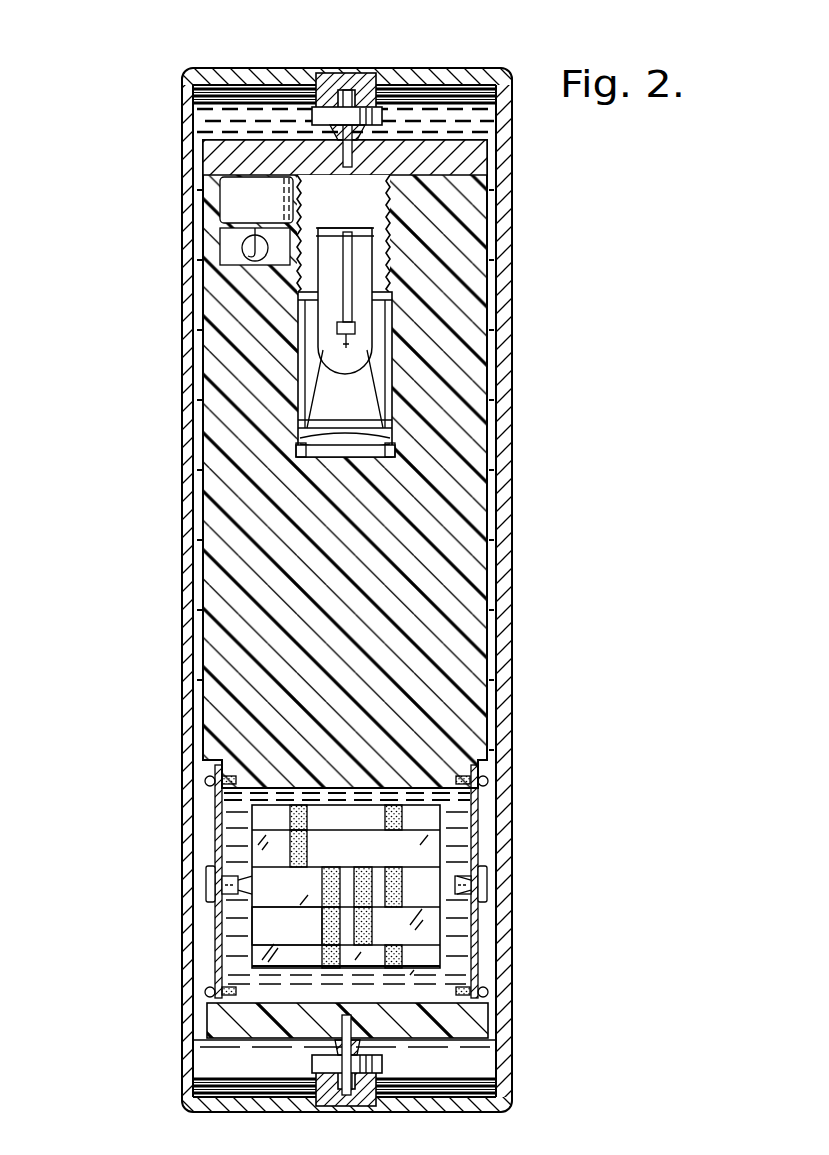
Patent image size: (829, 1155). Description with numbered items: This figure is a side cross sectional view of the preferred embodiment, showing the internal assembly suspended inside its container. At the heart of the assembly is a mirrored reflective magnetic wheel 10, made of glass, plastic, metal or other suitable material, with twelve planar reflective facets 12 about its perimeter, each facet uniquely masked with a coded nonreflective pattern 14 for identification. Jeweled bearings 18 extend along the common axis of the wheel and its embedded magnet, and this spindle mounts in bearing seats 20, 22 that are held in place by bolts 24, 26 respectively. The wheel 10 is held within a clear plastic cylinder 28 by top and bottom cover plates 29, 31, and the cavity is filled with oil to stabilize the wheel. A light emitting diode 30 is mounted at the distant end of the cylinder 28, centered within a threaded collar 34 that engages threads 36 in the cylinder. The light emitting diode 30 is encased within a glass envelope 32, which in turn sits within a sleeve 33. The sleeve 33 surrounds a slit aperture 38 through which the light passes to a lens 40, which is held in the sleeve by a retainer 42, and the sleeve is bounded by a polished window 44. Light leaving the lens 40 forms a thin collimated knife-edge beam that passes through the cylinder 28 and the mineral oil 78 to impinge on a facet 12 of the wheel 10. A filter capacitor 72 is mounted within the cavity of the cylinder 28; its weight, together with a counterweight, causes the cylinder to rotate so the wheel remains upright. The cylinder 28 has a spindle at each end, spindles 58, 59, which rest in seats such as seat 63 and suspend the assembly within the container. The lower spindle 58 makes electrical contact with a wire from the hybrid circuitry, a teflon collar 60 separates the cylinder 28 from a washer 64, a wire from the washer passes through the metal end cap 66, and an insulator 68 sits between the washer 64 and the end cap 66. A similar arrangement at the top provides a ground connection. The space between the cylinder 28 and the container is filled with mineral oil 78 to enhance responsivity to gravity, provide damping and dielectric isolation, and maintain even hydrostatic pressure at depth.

The mirrored reflective magnetic wheel 10 is at (446, 928).
The planar reflective facet 12 is at (255, 935).
The coded nonreflective pattern 14 is at (432, 966).
The jeweled bearings 18 is at (470, 873).
The bearing seat 20 is at (245, 890).
The bearing seat 22 is at (466, 895).
The bolt 24 is at (209, 867).
The bolt 26 is at (487, 886).
The clear plastic cylinder 28 is at (482, 664).
The top cover plate 29 is at (218, 798).
The light emitting diode 30 is at (338, 326).
The bottom cover plate 31 is at (477, 800).
The glass envelope 32 is at (343, 346).
The sleeve 33 is at (372, 332).
The threaded collar 34 is at (392, 284).
The threads 36 is at (388, 264).
The slit aperture 38 is at (382, 422).
The lens 40 is at (386, 440).
The retainer 42 is at (394, 450).
The polished window 44 is at (300, 455).
The spindle 58 is at (347, 1044).
The spindle 59 is at (353, 150).
The teflon collar 60 is at (376, 116).
The seat 63 is at (341, 88).
The washer 64 is at (326, 130).
The metal end cap 66 is at (245, 68).
The insulator 68 is at (322, 108).
The filter capacitor 72 is at (232, 205).
The mineral oil 78 is at (492, 732).